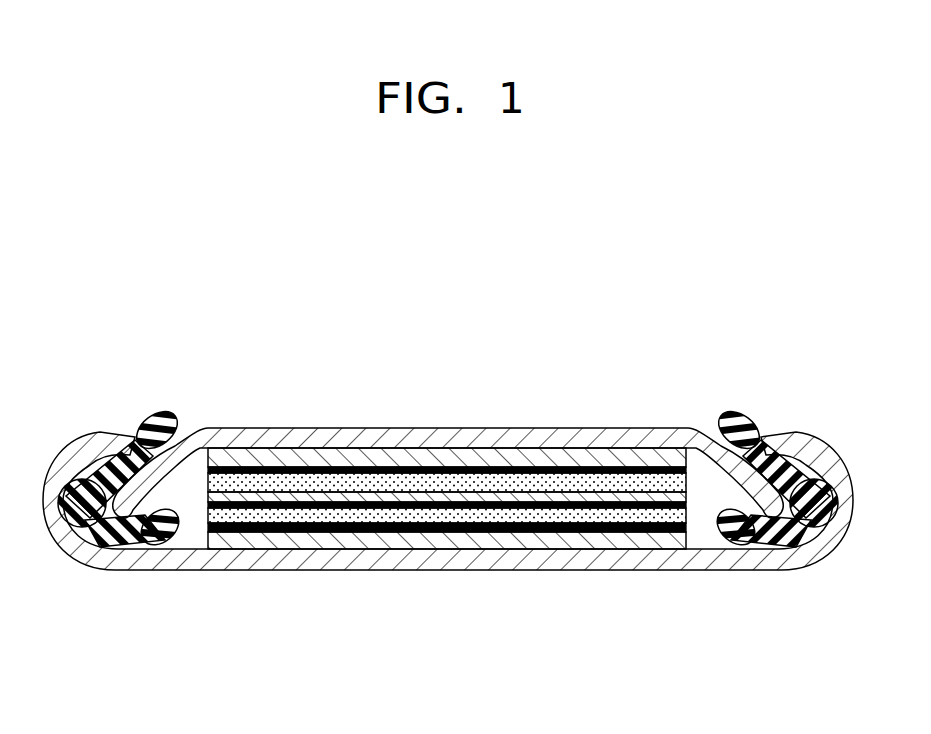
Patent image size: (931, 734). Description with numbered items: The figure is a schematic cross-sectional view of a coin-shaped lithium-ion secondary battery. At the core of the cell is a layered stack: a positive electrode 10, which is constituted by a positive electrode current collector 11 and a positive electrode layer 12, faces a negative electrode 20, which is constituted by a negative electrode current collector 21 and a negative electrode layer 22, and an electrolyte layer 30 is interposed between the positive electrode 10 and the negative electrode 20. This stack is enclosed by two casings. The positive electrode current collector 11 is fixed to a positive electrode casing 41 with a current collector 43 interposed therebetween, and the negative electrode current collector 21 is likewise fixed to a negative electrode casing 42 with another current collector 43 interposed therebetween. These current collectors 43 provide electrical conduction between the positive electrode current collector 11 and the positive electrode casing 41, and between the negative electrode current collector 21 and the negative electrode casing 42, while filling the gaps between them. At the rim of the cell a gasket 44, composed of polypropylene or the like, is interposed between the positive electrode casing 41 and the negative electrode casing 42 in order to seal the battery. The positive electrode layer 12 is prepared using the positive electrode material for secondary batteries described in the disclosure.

The positive electrode 10 is at (447, 610).
The positive electrode current collector 11 is at (480, 527).
The positive electrode layer 12 is at (525, 513).
The negative electrode 20 is at (447, 397).
The negative electrode current collector 21 is at (527, 467).
The negative electrode layer 22 is at (590, 470).
The electrolyte layer 30 is at (415, 505).
The positive electrode casing 41 is at (640, 572).
The negative electrode casing 42 is at (377, 430).
The current collector 43 is at (443, 455).
The gasket 44 is at (160, 410).